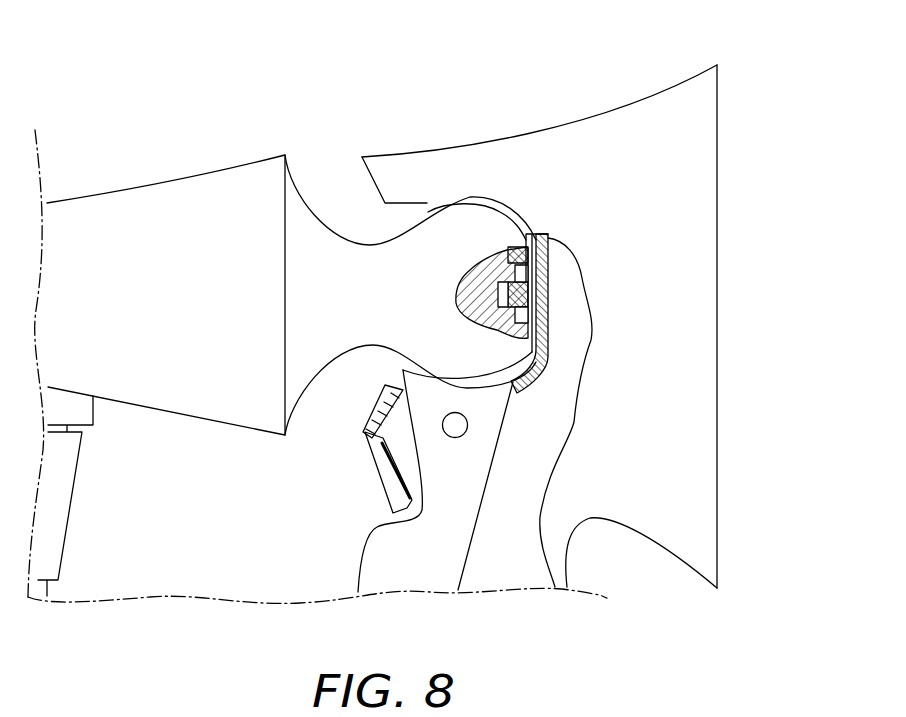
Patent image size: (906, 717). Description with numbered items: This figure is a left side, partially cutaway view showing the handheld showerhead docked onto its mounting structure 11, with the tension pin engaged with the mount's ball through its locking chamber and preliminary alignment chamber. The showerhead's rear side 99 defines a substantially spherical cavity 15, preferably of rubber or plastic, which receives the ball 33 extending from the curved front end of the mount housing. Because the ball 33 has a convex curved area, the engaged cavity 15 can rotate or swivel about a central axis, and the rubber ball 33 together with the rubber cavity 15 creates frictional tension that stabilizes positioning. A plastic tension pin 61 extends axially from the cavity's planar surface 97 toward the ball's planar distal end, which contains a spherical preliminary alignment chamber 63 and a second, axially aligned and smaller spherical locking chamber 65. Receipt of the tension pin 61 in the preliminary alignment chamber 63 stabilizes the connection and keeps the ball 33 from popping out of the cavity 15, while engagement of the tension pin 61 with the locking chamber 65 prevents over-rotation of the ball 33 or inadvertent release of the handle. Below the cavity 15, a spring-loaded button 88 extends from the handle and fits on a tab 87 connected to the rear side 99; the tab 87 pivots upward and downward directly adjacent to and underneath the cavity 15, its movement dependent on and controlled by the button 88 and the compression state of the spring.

The mounting structure 11 is at (182, 198).
The substantially spherical cavity 15 is at (428, 204).
The ball 33 is at (427, 260).
The tension pin 61 is at (527, 289).
The preliminary alignment chamber 63 is at (527, 250).
The locking chamber 65 is at (502, 288).
The tab 87 is at (340, 551).
The button 88 is at (427, 395).
The planar surface 97 is at (543, 333).
The rear side 99 is at (416, 180).